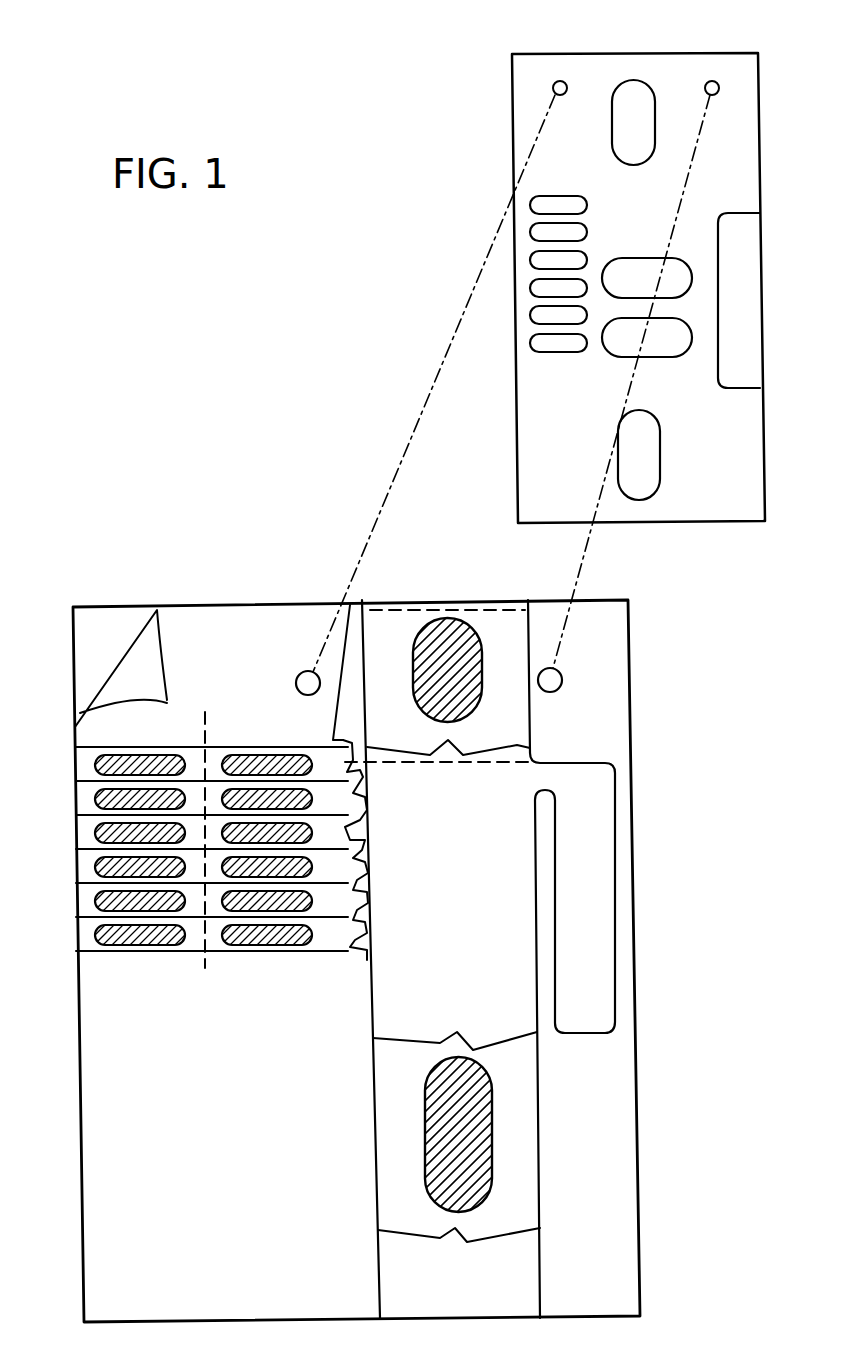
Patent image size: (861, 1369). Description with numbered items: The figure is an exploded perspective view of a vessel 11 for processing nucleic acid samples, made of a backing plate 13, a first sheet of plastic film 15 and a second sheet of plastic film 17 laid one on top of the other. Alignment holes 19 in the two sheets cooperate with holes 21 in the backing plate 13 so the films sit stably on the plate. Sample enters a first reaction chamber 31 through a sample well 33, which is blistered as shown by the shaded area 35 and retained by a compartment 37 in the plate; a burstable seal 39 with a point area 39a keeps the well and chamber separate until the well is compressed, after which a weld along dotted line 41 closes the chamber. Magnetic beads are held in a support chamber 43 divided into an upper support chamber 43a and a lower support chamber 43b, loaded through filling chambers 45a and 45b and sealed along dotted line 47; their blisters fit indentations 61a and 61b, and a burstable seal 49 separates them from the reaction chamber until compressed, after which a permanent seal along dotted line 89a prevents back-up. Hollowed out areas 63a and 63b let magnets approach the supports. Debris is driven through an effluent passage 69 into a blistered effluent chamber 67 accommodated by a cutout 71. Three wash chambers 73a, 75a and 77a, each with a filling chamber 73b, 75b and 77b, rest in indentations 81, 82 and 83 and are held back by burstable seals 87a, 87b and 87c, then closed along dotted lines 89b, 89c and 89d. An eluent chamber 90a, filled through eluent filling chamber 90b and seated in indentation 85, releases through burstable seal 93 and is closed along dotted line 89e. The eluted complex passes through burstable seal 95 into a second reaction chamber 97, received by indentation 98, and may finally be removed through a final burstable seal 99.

The vessel 11 is at (155, 575).
The backing plate 13 is at (713, 520).
The first sheet of plastic film 15 is at (83, 629).
The second sheet of plastic film 17 is at (130, 667).
The alignment holes 19 is at (302, 668).
The holes 21 is at (552, 88).
The first reaction chamber 31 is at (520, 950).
The sample well 33 is at (473, 618).
The blister 35 is at (490, 653).
The compartment 37 is at (645, 108).
The burstable seal 39 is at (530, 748).
The point area 39a is at (463, 748).
The dotted line 41 is at (500, 765).
The support chamber 43 is at (245, 745).
The upper support chamber 43a is at (297, 745).
The lower support chamber 43b is at (223, 793).
The filling chamber 45a is at (87, 755).
The filling chamber 45b is at (87, 795).
The dotted line 47 is at (202, 712).
The burstable seal 49 is at (357, 602).
The indentation 61a is at (588, 205).
The indentation 61b is at (588, 232).
The hollowed out area 63a is at (680, 280).
The hollowed out area 63b is at (673, 337).
The effluent chamber 67 is at (603, 858).
The effluent passage 69 is at (533, 778).
The indentation or cutout 71 is at (750, 293).
The wash chamber 73a is at (220, 840).
The filling chamber 73b is at (87, 837).
The wash chamber 75a is at (217, 873).
The filling chamber 75b is at (87, 858).
The wash chamber 77a is at (220, 910).
The filling chamber 77b is at (87, 893).
The indentation 81 is at (530, 262).
The indentation 82 is at (530, 290).
The indentation 83 is at (530, 318).
The indentation 85 is at (530, 347).
The burstable seal 87a is at (340, 836).
The burstable seal 87b is at (368, 845).
The burstable seal 87c is at (368, 885).
The dotted line 89a is at (362, 780).
The dotted line 89b is at (365, 823).
The dotted line 89c is at (368, 862).
The dotted line 89d is at (368, 893).
The dotted line 89e is at (368, 925).
The eluent chamber 90a is at (232, 942).
The eluent filling chamber 90b is at (87, 940).
The burstable seal 93 is at (345, 945).
The burstable seal 95 is at (460, 1033).
The second reaction chamber 97 is at (522, 1155).
The indentation 98 is at (660, 463).
The final burstable seal 99 is at (480, 1240).